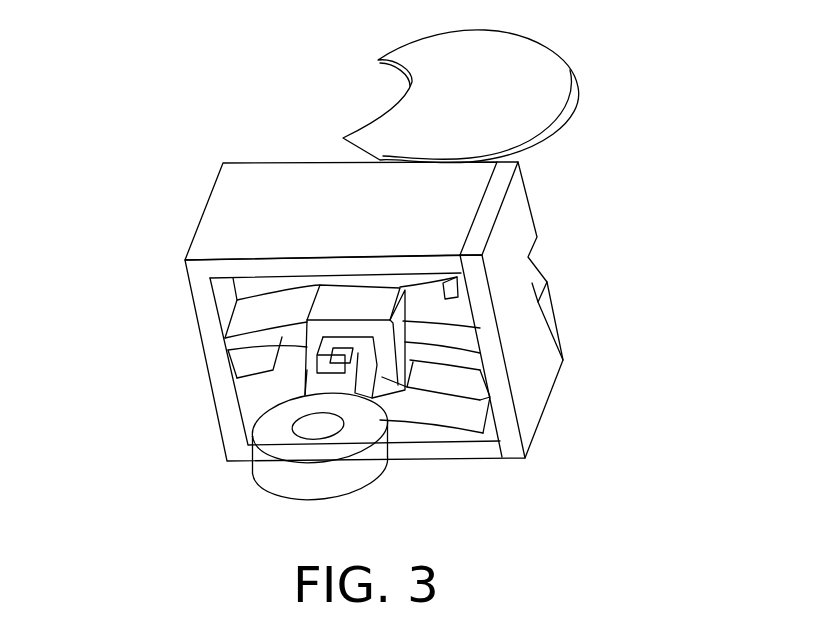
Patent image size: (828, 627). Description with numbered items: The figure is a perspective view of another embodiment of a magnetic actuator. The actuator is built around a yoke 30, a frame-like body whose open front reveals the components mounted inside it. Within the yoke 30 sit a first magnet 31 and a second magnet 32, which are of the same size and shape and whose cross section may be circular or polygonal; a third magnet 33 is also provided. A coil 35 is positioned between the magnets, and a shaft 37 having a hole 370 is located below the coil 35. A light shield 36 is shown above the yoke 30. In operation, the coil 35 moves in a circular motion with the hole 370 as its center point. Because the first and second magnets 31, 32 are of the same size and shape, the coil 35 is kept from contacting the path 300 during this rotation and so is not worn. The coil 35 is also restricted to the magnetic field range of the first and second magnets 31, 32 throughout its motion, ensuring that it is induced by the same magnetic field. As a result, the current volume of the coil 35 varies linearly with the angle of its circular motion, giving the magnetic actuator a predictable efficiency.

The yoke 30 is at (263, 197).
The path 300 is at (442, 339).
The first magnet 31 is at (240, 286).
The second magnet 32 is at (447, 415).
The third magnet 33 is at (330, 357).
The coil 35 is at (385, 303).
The light shield 36 is at (510, 90).
The shaft 37 is at (358, 430).
The hole 370 is at (313, 428).